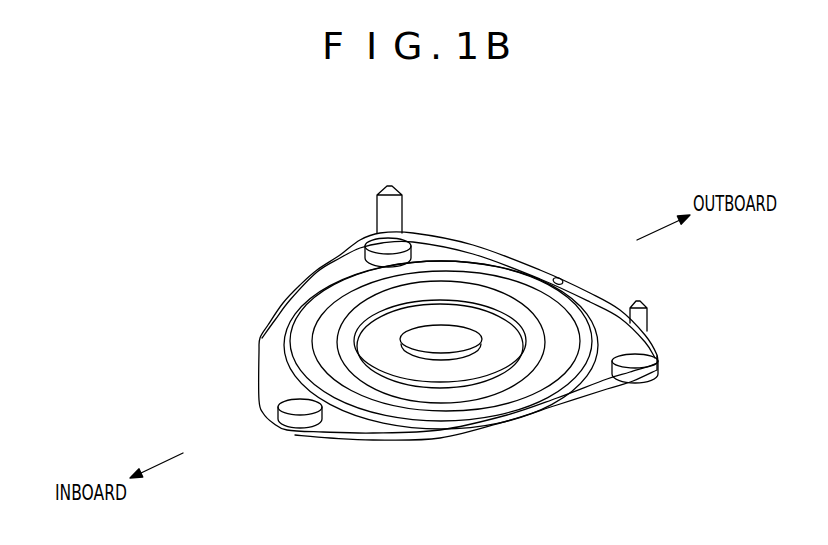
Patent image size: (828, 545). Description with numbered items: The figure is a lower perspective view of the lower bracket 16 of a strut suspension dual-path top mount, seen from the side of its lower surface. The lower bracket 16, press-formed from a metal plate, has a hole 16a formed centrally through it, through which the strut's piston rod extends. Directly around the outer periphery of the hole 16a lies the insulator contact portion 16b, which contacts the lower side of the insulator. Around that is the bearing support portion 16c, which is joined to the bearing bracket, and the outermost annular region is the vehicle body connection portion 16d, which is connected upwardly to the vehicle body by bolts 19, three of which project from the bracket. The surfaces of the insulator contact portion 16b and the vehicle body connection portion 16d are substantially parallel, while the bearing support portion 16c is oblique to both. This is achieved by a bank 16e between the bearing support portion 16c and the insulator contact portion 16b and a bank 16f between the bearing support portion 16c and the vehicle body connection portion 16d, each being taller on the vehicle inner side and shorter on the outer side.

The lower bracket 16 is at (451, 350).
The hole 16a is at (442, 342).
The insulator contact portion 16b is at (460, 370).
The bearing support portion 16c is at (543, 385).
The vehicle body connection portion 16d is at (600, 387).
The bank (slant surface) 16e is at (503, 392).
The bank (slant surface) 16f is at (305, 350).
The bolts 19 is at (397, 206).